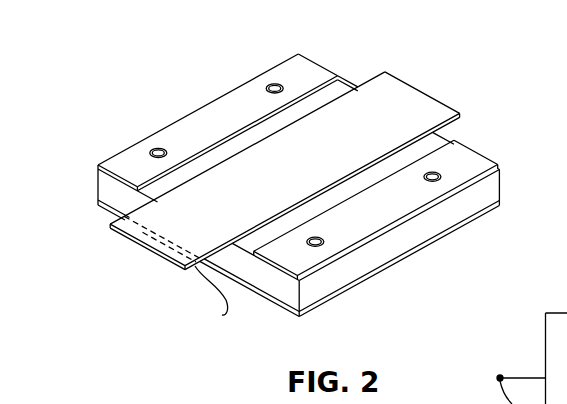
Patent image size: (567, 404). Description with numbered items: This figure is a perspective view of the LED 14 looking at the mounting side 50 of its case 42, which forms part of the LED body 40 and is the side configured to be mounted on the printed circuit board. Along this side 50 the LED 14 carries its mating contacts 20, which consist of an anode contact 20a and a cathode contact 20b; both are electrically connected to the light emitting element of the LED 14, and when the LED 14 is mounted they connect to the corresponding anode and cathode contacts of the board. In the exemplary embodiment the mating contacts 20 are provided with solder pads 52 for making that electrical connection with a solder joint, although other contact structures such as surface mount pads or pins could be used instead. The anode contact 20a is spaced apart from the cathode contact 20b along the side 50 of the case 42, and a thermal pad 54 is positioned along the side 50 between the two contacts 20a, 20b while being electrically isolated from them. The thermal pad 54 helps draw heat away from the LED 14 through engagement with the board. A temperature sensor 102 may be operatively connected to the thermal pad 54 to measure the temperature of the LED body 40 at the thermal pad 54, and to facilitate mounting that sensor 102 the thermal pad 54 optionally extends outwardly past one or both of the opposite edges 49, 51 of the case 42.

The LED 14 is at (133, 50).
The mating contacts 20 is at (305, 263).
The anode contact 20a is at (283, 66).
The cathode contact 20b is at (462, 163).
The body 40 is at (442, 227).
The case 42 is at (500, 188).
The edge 49 is at (278, 280).
The side 50 is at (363, 62).
The edge 51 is at (453, 135).
The solder pads 52 is at (207, 118).
The thermal pad 54 is at (187, 222).
The temperature sensor 102 is at (158, 248).